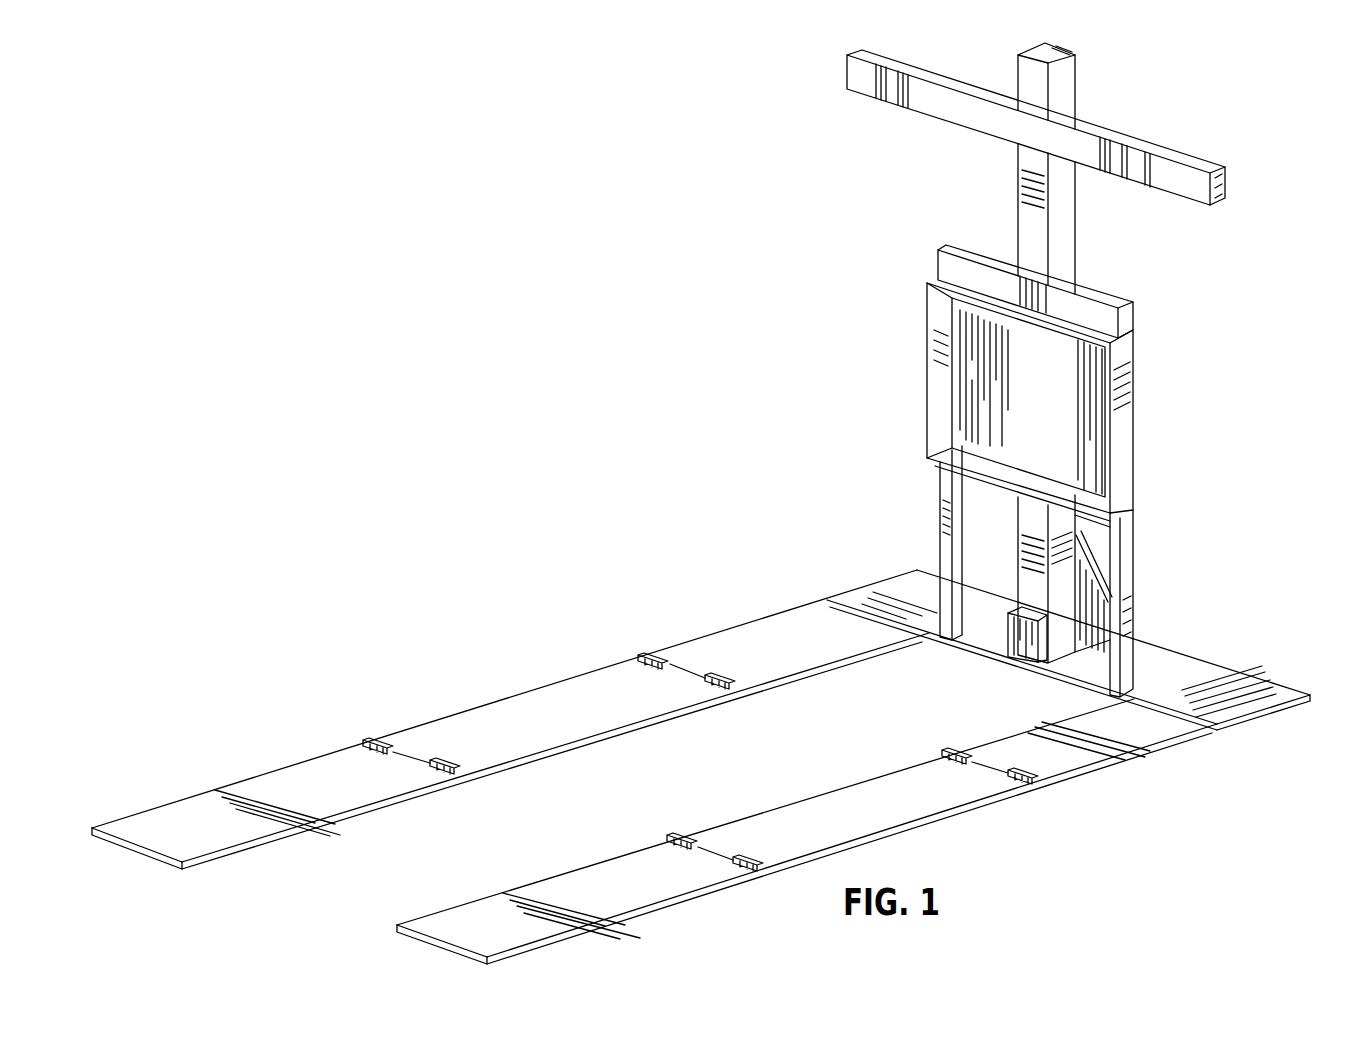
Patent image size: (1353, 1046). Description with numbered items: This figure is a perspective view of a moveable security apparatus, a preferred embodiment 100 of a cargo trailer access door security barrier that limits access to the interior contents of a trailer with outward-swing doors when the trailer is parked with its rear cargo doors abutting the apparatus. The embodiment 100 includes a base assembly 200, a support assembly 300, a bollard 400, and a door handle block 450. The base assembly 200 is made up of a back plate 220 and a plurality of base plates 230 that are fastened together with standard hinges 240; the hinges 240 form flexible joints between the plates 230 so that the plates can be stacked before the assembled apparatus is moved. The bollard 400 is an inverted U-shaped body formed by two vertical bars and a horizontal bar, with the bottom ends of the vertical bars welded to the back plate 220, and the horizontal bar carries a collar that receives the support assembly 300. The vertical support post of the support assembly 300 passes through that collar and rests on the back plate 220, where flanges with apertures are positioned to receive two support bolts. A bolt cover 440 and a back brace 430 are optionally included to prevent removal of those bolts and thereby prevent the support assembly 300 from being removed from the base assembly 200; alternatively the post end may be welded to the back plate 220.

The preferred embodiment 100 is at (417, 259).
The base assembly 200 is at (800, 606).
The back plate 220 is at (1255, 705).
The base plates 230 is at (293, 790).
The hinges 240 is at (710, 677).
The support assembly 300 is at (1078, 212).
The bollard 400 is at (938, 530).
The back brace 430 is at (1090, 553).
The bolt cover 440 is at (1015, 633).
The door handle block 450 is at (1056, 414).